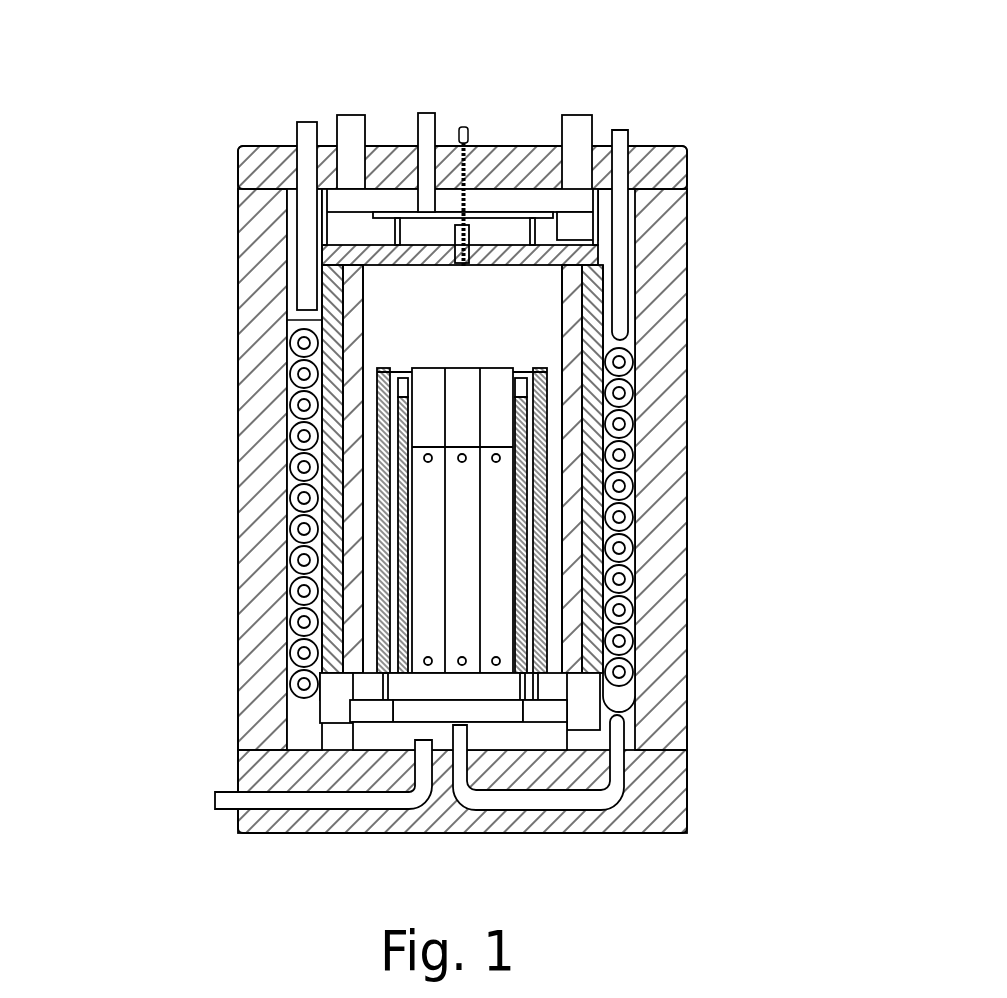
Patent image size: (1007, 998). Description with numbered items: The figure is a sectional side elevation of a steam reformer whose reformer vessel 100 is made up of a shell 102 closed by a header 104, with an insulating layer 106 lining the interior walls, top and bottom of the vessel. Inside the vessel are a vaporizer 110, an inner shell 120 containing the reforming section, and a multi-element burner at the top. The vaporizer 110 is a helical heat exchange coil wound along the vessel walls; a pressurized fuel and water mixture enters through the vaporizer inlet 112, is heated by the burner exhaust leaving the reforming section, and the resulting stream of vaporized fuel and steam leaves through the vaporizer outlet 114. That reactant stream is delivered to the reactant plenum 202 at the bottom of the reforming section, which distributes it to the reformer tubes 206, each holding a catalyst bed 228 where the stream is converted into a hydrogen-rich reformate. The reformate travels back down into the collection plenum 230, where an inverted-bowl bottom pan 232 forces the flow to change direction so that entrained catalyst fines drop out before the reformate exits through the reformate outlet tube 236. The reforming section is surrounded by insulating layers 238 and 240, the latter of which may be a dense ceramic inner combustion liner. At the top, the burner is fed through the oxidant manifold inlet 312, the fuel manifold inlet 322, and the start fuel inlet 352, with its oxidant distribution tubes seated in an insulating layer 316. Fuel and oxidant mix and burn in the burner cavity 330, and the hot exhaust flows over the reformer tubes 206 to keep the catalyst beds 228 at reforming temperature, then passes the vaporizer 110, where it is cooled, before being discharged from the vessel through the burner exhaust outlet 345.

The reformer vessel 100 is at (147, 70).
The shell 102 is at (240, 240).
The header 104 is at (238, 158).
The insulating layer 106 is at (687, 160).
The vaporizer 110 is at (632, 362).
The vaporizer inlet 112 is at (620, 129).
The vaporizer outlet 114 is at (617, 745).
The shell 120 is at (320, 322).
The reactant plenum 202 is at (473, 712).
The reformer tubes 206 is at (547, 422).
The catalyst bed 228 is at (550, 510).
The collection plenum 230 is at (395, 703).
The bottom pan 232 is at (363, 738).
The reformate outlet tube 236 is at (225, 802).
The insulating layer 238 is at (340, 522).
The insulating layer 240 is at (353, 582).
The oxidant manifold inlet 312 is at (580, 113).
The insulating layer 316 is at (602, 250).
The fuel manifold inlet 322 is at (352, 114).
The burner cavity 330 is at (495, 338).
The burner exhaust outlet 345 is at (305, 121).
The start fuel inlet 352 is at (430, 113).